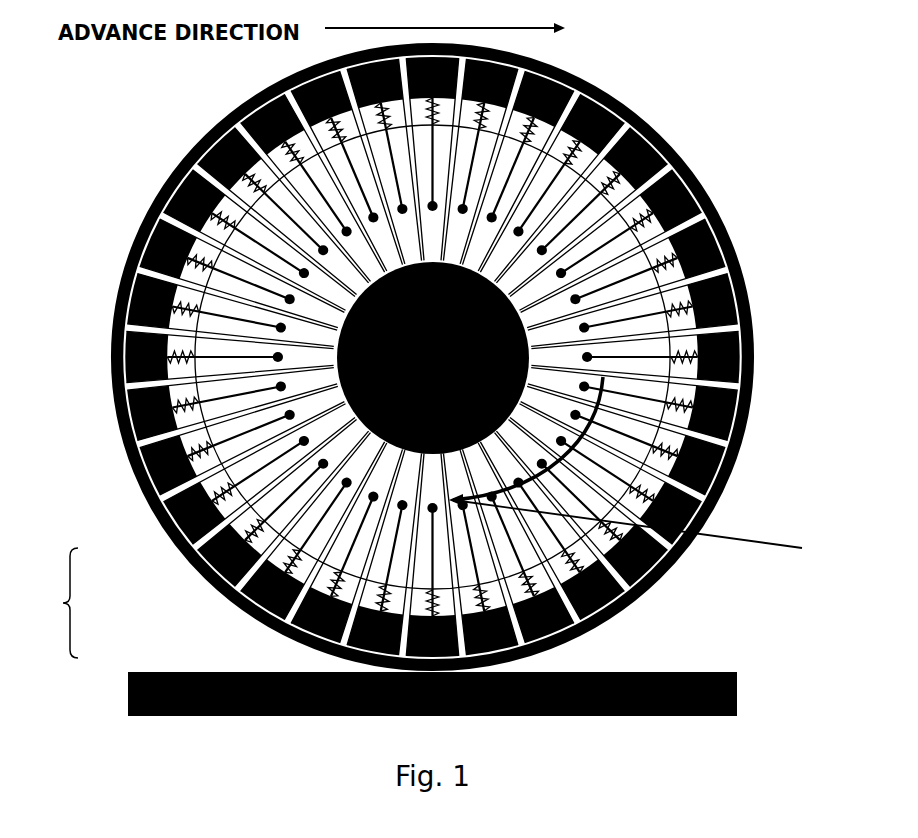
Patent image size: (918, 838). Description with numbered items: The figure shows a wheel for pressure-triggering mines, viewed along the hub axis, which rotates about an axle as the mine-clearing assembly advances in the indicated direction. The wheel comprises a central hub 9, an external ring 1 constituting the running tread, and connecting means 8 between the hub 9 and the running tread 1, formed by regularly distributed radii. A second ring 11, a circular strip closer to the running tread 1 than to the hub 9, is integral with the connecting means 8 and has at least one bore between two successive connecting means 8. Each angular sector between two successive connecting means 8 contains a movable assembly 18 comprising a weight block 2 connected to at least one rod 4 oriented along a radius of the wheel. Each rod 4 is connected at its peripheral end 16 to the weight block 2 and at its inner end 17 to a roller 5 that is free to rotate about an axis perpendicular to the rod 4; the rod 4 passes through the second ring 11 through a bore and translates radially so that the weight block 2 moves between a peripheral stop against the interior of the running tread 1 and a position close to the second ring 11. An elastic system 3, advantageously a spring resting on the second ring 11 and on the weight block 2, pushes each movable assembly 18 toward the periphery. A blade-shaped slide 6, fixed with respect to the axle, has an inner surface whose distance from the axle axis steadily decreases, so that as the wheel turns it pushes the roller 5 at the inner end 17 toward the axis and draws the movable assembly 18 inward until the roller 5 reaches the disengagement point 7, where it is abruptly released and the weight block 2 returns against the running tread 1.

The external ring 1 is at (600, 636).
The weight block 2 is at (167, 540).
The elastic system 3 is at (133, 467).
The rod 4 is at (182, 558).
The roller 5 is at (197, 573).
The slide 6 is at (652, 480).
The disengagement point 7 is at (638, 527).
The connecting means 8 is at (247, 311).
The central hub 9 is at (348, 300).
The second ring 11 is at (350, 296).
The peripheral end 16 is at (212, 498).
The inner end 17 is at (335, 382).
The movable assembly 18 is at (49, 603).